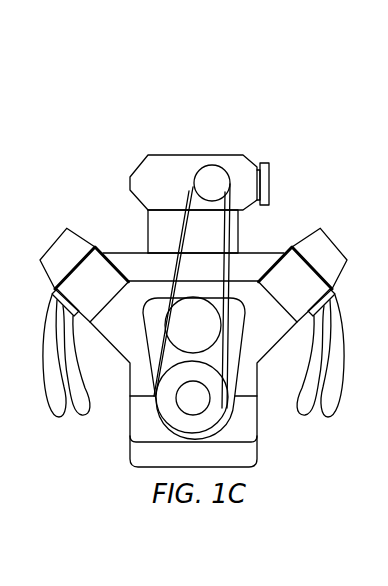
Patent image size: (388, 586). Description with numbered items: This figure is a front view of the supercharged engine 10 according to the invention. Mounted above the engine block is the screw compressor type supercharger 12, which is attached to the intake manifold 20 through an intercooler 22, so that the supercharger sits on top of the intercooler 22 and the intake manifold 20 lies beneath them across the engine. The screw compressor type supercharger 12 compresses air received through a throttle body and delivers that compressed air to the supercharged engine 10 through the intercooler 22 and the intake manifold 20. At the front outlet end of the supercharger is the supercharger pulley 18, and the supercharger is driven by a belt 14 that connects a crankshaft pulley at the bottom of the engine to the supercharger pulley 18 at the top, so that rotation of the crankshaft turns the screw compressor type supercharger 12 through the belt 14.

The supercharged engine 10 is at (121, 91).
The screw compressor type supercharger 12 is at (167, 190).
The belt 14 is at (158, 236).
The supercharger pulley 18 is at (215, 180).
The intake manifold 20 is at (163, 274).
The intercooler 22 is at (217, 243).